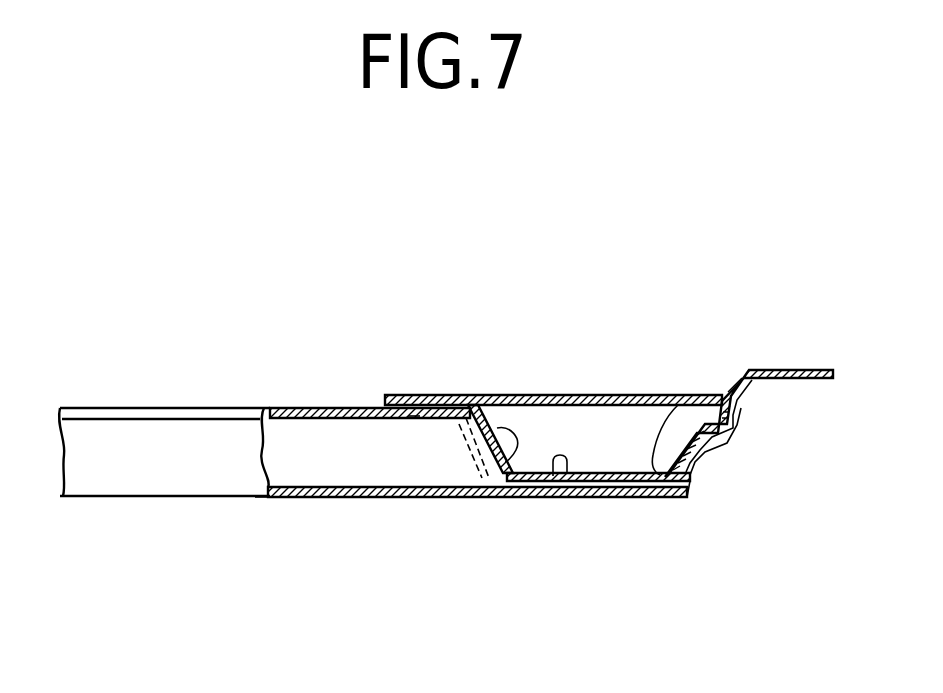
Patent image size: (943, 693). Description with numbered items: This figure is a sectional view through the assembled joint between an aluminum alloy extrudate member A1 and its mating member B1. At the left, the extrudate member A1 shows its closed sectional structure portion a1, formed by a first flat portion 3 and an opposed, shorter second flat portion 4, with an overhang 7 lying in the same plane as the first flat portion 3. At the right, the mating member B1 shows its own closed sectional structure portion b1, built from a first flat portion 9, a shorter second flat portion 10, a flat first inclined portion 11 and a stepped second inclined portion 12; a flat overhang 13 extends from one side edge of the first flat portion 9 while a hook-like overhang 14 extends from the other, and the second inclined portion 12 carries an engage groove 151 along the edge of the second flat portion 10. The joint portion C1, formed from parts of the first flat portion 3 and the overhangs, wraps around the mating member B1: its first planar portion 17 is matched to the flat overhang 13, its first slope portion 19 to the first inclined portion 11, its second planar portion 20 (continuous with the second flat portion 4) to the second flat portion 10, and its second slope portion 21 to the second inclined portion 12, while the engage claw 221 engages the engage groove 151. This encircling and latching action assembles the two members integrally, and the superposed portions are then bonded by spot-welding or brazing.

The overhang 7 is at (193, 407).
The first flat portion 3 is at (317, 407).
The second flat portion 4 is at (323, 502).
The first flat portion 9 is at (532, 393).
The second flat portion 10 is at (557, 482).
The first inclined portion 11 is at (482, 395).
The overhang 13 is at (415, 395).
The overhang 14 is at (798, 371).
The second inclined portion 12 is at (730, 442).
The engage groove 151 is at (693, 470).
The first planar portion 17 is at (414, 419).
The first slope portion 19 is at (470, 485).
The second planar portion 20 is at (617, 498).
The second slope portion 21 is at (693, 483).
The engage claw 221 is at (678, 405).
The extrudate member A1 is at (138, 407).
The closed sectional structure portion a1 is at (265, 502).
The closed sectional structure portion b1 is at (558, 392).
The mating member B1 is at (608, 392).
The joint portion C1 is at (645, 503).